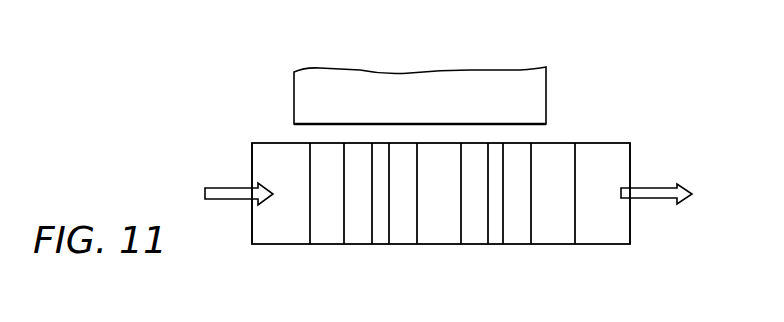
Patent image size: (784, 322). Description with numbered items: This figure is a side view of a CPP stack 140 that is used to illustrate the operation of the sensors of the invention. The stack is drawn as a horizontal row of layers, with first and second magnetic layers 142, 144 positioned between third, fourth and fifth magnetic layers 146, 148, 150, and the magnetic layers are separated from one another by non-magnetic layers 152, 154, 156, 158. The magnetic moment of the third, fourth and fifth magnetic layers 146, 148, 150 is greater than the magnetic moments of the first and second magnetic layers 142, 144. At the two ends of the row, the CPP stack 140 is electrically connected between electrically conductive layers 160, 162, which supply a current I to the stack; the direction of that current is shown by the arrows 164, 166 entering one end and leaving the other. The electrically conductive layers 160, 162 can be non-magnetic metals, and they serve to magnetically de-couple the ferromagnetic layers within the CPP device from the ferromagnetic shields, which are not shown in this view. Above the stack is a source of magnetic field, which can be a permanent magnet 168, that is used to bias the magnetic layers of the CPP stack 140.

The CPP stack 140 is at (588, 98).
The first magnetic layer 142 is at (377, 148).
The second magnetic layer 144 is at (498, 237).
The third magnetic layer 146 is at (324, 238).
The fourth magnetic layer 148 is at (430, 238).
The fifth magnetic layer 150 is at (556, 148).
The non-magnetic layer 152 is at (357, 147).
The non-magnetic layer 154 is at (403, 238).
The non-magnetic layer 156 is at (477, 150).
The non-magnetic layer 158 is at (518, 148).
The electrically conductive layer 160 is at (260, 227).
The electrically conductive layer 162 is at (613, 227).
The arrow 164 is at (222, 188).
The arrow 166 is at (667, 200).
The permanent magnet 168 is at (387, 81).